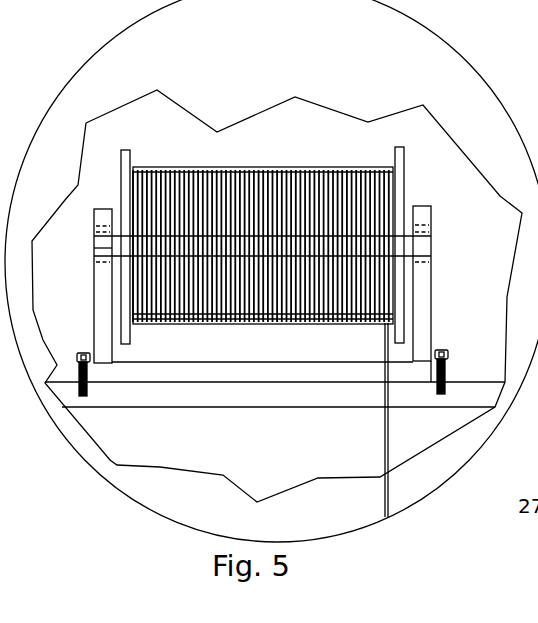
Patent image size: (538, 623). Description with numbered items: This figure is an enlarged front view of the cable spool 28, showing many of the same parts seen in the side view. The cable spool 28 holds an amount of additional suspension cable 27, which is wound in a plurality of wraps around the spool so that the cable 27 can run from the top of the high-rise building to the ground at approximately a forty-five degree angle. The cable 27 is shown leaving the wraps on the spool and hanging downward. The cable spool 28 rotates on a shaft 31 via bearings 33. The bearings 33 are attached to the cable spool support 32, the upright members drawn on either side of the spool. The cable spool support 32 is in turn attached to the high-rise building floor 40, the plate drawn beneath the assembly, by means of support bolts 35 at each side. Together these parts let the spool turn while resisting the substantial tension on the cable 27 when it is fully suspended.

The suspension cable 27 is at (383, 503).
The cable spool 28 is at (130, 163).
The shaft 31 is at (420, 243).
The cable spool support 32 is at (93, 313).
The bearings 33 is at (430, 257).
The support bolts 35 is at (438, 372).
The high-rise building floor 40 is at (492, 380).